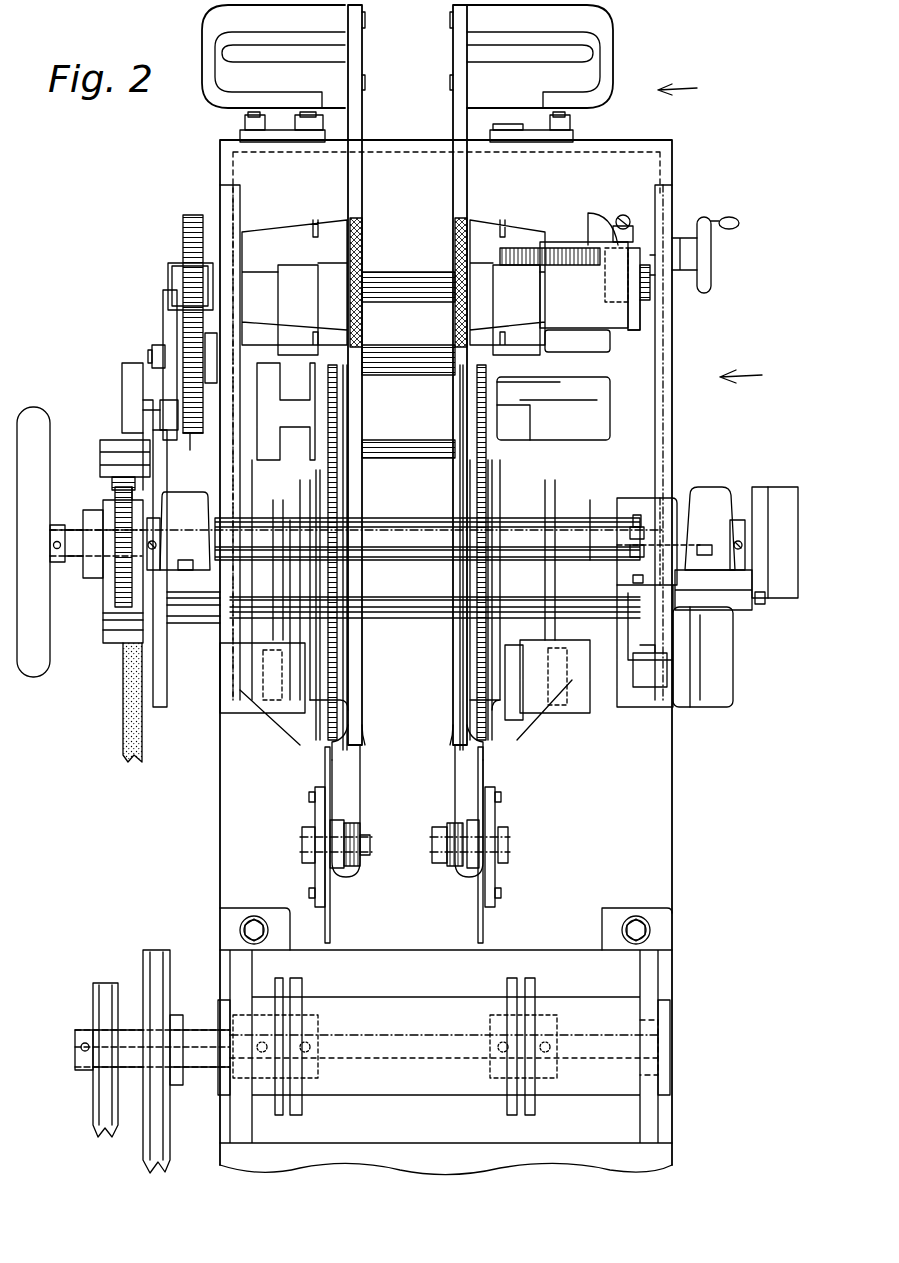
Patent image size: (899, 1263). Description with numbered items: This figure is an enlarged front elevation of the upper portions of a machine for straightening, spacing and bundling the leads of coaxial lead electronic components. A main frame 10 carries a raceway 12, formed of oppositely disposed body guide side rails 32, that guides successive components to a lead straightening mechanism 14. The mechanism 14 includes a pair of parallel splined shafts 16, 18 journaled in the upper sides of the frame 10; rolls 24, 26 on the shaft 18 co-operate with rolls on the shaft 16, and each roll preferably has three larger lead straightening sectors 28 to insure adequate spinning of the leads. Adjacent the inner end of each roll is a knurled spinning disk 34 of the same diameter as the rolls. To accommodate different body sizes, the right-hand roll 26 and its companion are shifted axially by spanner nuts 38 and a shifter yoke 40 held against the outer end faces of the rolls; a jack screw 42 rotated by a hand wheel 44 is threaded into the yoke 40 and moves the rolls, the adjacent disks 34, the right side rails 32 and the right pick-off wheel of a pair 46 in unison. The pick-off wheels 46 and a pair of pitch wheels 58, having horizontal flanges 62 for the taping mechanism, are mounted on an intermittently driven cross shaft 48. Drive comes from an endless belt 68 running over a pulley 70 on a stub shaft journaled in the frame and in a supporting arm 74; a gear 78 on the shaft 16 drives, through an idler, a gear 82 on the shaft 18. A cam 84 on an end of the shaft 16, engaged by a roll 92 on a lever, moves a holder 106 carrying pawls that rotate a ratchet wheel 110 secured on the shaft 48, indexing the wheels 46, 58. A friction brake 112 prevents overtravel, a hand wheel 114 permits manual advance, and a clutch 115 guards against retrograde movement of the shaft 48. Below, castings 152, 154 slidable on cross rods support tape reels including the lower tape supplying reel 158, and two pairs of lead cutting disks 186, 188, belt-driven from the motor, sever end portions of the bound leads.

The main frame 10 is at (677, 802).
The raceway 12 is at (690, 89).
The lead straightening mechanism 14 is at (748, 377).
The splined shaft 16 is at (150, 335).
The splined shaft 18 is at (405, 272).
The lead straightening roll 24 is at (285, 230).
The lead straightening roll 26 is at (520, 228).
The lead straightening sector 28 is at (530, 295).
The side rail 32 is at (362, 118).
The spinning disk 34 is at (362, 225).
The spanner nut 38 is at (636, 330).
The shifter yoke 40 is at (607, 212).
The jack screw 42 is at (548, 248).
The hand wheel 44 is at (735, 222).
The pick-off wheel 46 is at (418, 468).
The cross shaft 48 is at (380, 565).
The pitch wheel 58 is at (515, 482).
The horizontal flange 62 is at (520, 758).
The endless belt 68 is at (135, 762).
The pulley 70 is at (122, 372).
The supporting arm 74 is at (150, 395).
The gear 78 is at (190, 450).
The gear 82 is at (183, 235).
The cam 84 is at (163, 308).
The roll 92 is at (160, 415).
The holder 106 is at (120, 643).
The ratchet wheel 110 is at (113, 595).
The friction brake 112 is at (708, 487).
The hand wheel 114 is at (33, 677).
The clutch 115 is at (775, 487).
The casting 152 is at (350, 877).
The casting 154 is at (460, 877).
The lower tape supplying reel 158 is at (515, 914).
The lead cutting disk 186 is at (538, 963).
The lead cutting disk 188 is at (487, 983).